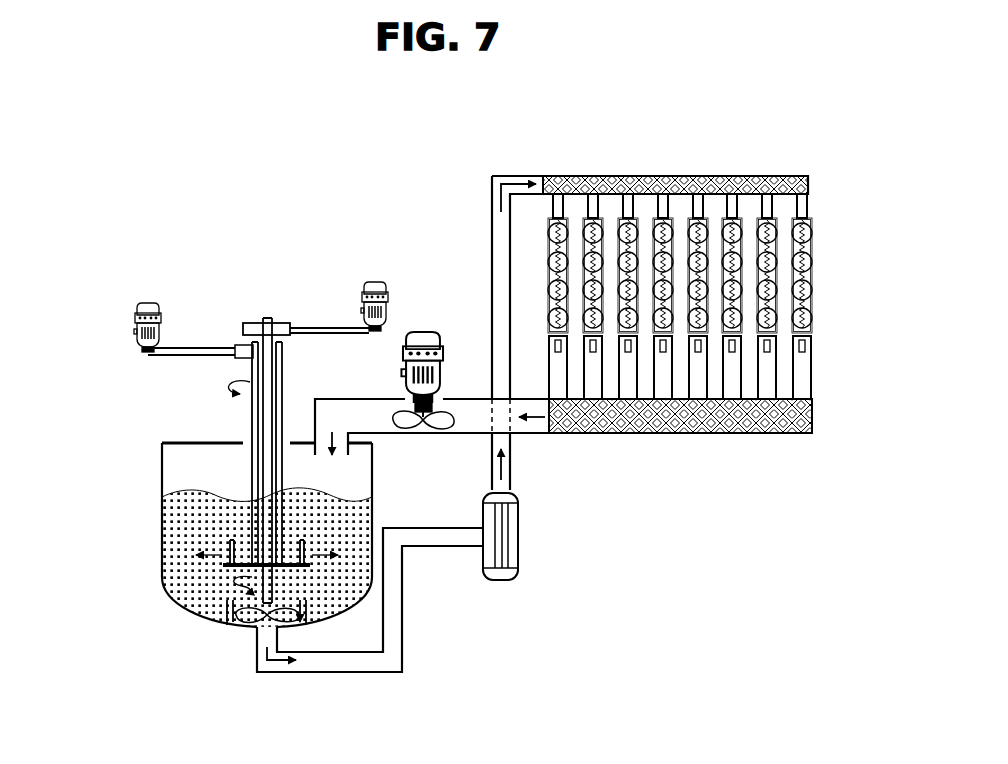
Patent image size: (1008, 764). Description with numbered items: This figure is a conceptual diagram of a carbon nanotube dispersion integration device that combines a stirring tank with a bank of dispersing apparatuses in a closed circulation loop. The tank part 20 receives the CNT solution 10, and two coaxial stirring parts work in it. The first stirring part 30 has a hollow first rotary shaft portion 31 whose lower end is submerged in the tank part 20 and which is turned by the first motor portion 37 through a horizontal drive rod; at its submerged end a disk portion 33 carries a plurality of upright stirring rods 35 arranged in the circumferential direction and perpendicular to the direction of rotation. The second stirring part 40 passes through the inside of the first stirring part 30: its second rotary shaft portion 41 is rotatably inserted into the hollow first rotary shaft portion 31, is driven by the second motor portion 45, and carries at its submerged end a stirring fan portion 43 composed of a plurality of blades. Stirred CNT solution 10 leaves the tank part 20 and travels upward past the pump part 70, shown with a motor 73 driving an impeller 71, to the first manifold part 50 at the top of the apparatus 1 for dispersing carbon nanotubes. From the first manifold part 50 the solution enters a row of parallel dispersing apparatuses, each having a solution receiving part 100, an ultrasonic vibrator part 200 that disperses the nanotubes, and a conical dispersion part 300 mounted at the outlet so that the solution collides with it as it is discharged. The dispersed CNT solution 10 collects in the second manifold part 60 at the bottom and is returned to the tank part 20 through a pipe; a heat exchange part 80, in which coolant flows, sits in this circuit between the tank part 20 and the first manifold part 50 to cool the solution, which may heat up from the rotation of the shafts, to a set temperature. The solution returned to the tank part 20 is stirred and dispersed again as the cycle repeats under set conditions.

The apparatus for dispersing carbon nanotubes 1 is at (712, 303).
The CNT solution 10 is at (205, 600).
The tank part 20 is at (162, 550).
The first stirring part 30 is at (191, 464).
The first rotary shaft portion 31 is at (252, 420).
The disk portion 33 is at (243, 546).
The stirring rod 35 is at (237, 560).
The first motor portion 37 is at (171, 347).
The second stirring part 40 is at (315, 381).
The second rotary shaft portion 41 is at (257, 322).
The stirring fan portion 43 is at (296, 345).
The second motor portion 45 is at (339, 268).
The first manifold part 50 is at (625, 180).
The second manifold part 60 is at (670, 425).
The pump part 70 is at (433, 265).
The impeller 71 is at (445, 418).
The circulation motor 73 is at (415, 332).
The heat exchange part 80 is at (520, 535).
The solution receiving part 100 is at (806, 220).
The ultrasonic vibrator part 200 is at (807, 234).
The conical dispersion part 300 is at (806, 346).